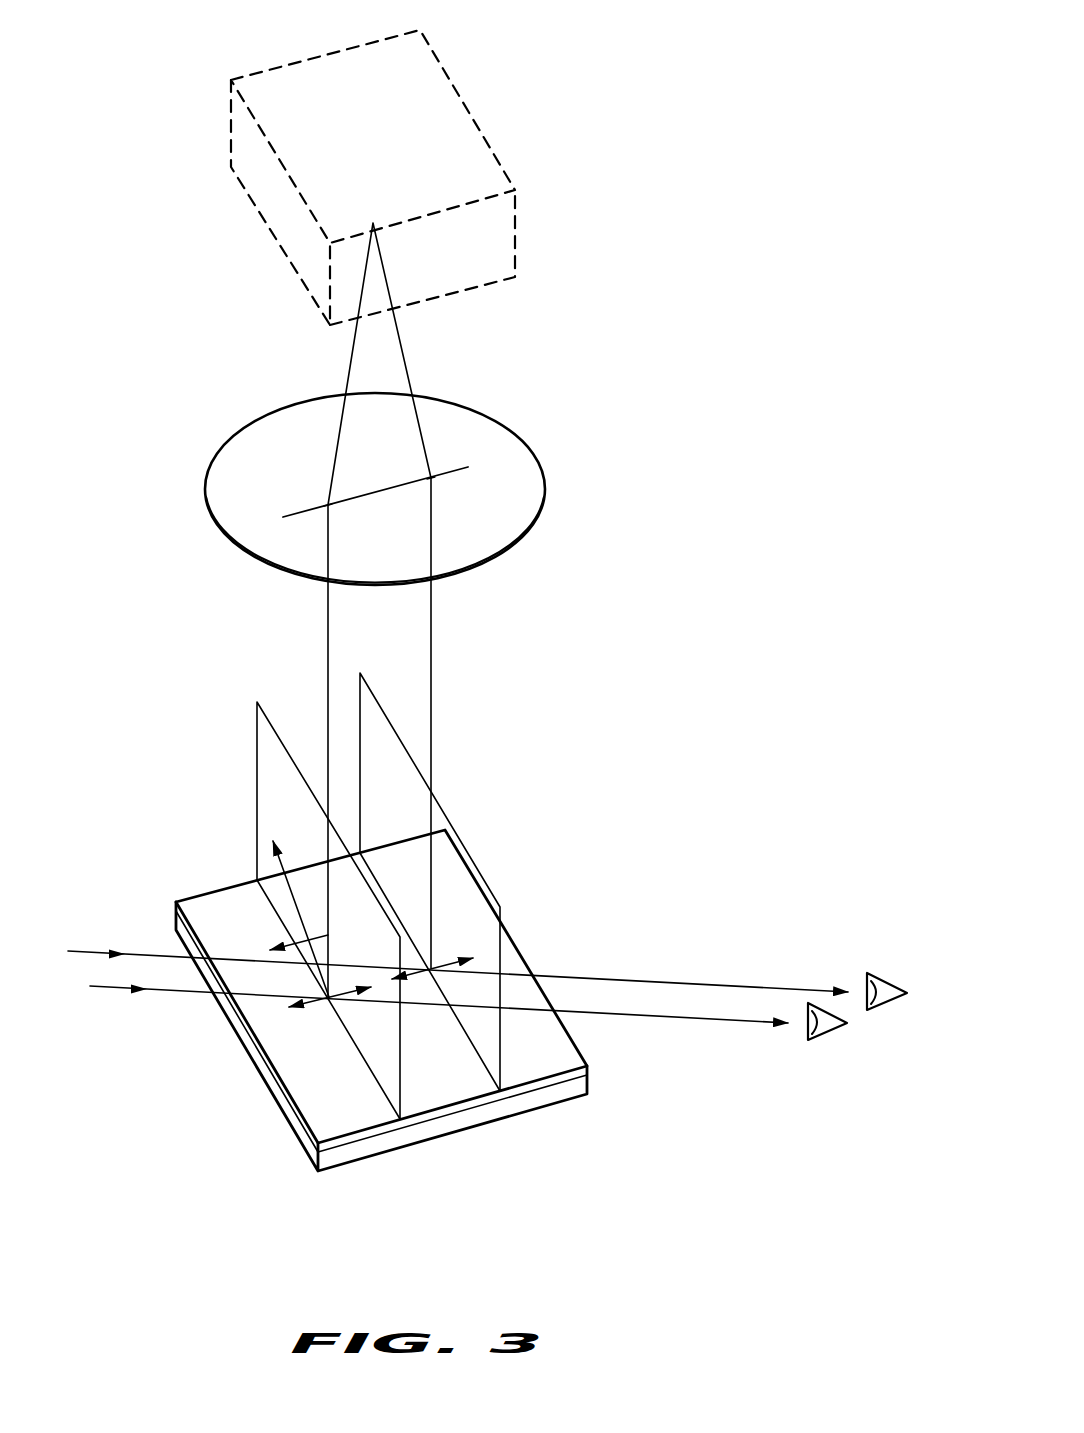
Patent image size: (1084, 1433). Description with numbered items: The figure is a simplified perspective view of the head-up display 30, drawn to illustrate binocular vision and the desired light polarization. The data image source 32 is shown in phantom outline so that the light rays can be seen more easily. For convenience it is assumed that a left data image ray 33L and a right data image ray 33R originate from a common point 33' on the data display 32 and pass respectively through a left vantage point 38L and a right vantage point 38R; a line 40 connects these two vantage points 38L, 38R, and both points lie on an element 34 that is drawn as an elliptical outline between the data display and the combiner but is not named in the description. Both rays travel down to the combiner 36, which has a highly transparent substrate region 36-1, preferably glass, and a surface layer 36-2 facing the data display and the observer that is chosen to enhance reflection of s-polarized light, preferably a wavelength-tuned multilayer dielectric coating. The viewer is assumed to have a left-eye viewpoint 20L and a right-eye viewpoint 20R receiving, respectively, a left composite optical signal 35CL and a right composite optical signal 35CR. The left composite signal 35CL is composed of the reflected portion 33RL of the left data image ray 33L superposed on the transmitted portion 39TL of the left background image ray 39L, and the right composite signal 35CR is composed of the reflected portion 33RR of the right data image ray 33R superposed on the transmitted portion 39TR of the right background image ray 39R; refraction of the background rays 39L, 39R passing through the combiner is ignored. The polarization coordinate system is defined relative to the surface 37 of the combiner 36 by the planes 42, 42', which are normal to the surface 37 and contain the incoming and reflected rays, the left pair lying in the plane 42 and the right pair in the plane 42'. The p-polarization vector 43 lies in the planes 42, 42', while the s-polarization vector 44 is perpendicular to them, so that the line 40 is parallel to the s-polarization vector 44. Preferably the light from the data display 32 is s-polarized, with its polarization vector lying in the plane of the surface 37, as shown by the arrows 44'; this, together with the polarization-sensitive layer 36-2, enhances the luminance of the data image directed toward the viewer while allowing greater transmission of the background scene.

The left-eye viewpoint 20L is at (833, 1037).
The right-eye viewpoint 20R is at (890, 985).
The head-up display 30 is at (642, 698).
The data image source 32 is at (327, 50).
The common point 33' is at (381, 332).
The left data image ray 33L is at (328, 640).
The right data image ray 33R is at (431, 628).
The reflected portion of left data image ray 33RL is at (725, 1022).
The reflected portion of right data image ray 33RR is at (717, 983).
The lens 34 is at (493, 427).
The left composite optical signal 35CL is at (787, 1063).
The right composite optical signal 35CR is at (798, 957).
The combiner 36 is at (200, 903).
The substrate region 36-1 is at (283, 1105).
The surface layer 36-2 is at (253, 1045).
The surface 37 is at (445, 1083).
The left vantage point 38L is at (328, 505).
The right vantage point 38R is at (431, 478).
The left background image ray 39L is at (110, 992).
The right background image ray 39R is at (93, 947).
The transmitted portion of left background image ray 39TL is at (628, 1015).
The transmitted portion of right background image ray 39TR is at (612, 977).
The line connecting vantage points 40 is at (375, 493).
The plane 42 is at (298, 910).
The plane 42' is at (430, 878).
The p-polarization vector 43 is at (282, 858).
The s-polarization vector 44 is at (275, 921).
The arrows 44' is at (388, 984).